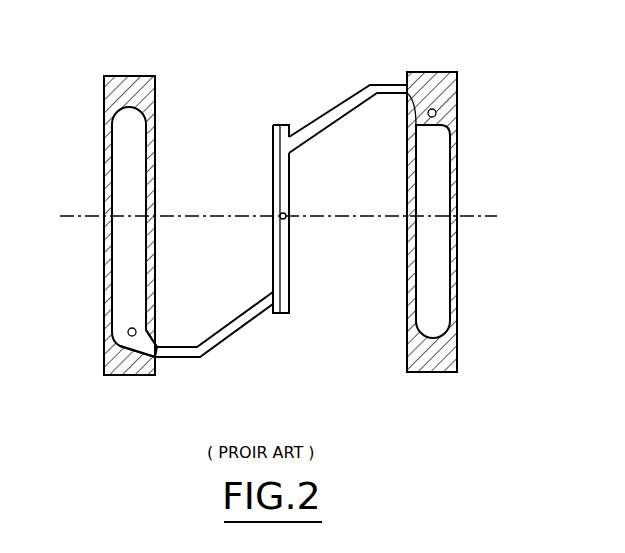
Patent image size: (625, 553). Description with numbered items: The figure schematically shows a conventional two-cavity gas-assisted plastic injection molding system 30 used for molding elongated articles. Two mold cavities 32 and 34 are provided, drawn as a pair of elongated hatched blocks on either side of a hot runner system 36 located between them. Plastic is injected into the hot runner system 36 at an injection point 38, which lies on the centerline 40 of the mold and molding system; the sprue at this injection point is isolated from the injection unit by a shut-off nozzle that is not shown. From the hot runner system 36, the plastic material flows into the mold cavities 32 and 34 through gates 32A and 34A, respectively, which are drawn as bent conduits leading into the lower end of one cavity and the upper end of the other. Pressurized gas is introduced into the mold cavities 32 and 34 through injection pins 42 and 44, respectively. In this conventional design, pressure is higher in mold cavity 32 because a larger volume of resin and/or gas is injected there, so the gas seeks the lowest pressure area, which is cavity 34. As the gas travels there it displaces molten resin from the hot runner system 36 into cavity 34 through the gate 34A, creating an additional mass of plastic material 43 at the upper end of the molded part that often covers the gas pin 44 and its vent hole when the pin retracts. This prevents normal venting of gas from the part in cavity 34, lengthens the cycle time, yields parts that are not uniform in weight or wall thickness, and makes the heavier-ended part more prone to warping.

The two-cavity gas-assisted plastic injection molding system 30 is at (127, 414).
The mold cavity 32 is at (104, 183).
The gate 32A is at (160, 358).
The mold cavity 34 is at (460, 277).
The gate 34A is at (398, 84).
The hot runner system 36 is at (273, 271).
The injection point 38 is at (280, 213).
The centerline 40 is at (485, 212).
The injection pin 42 is at (136, 328).
The additional mass of plastic material 43 is at (420, 112).
The injection pin 44 is at (437, 115).